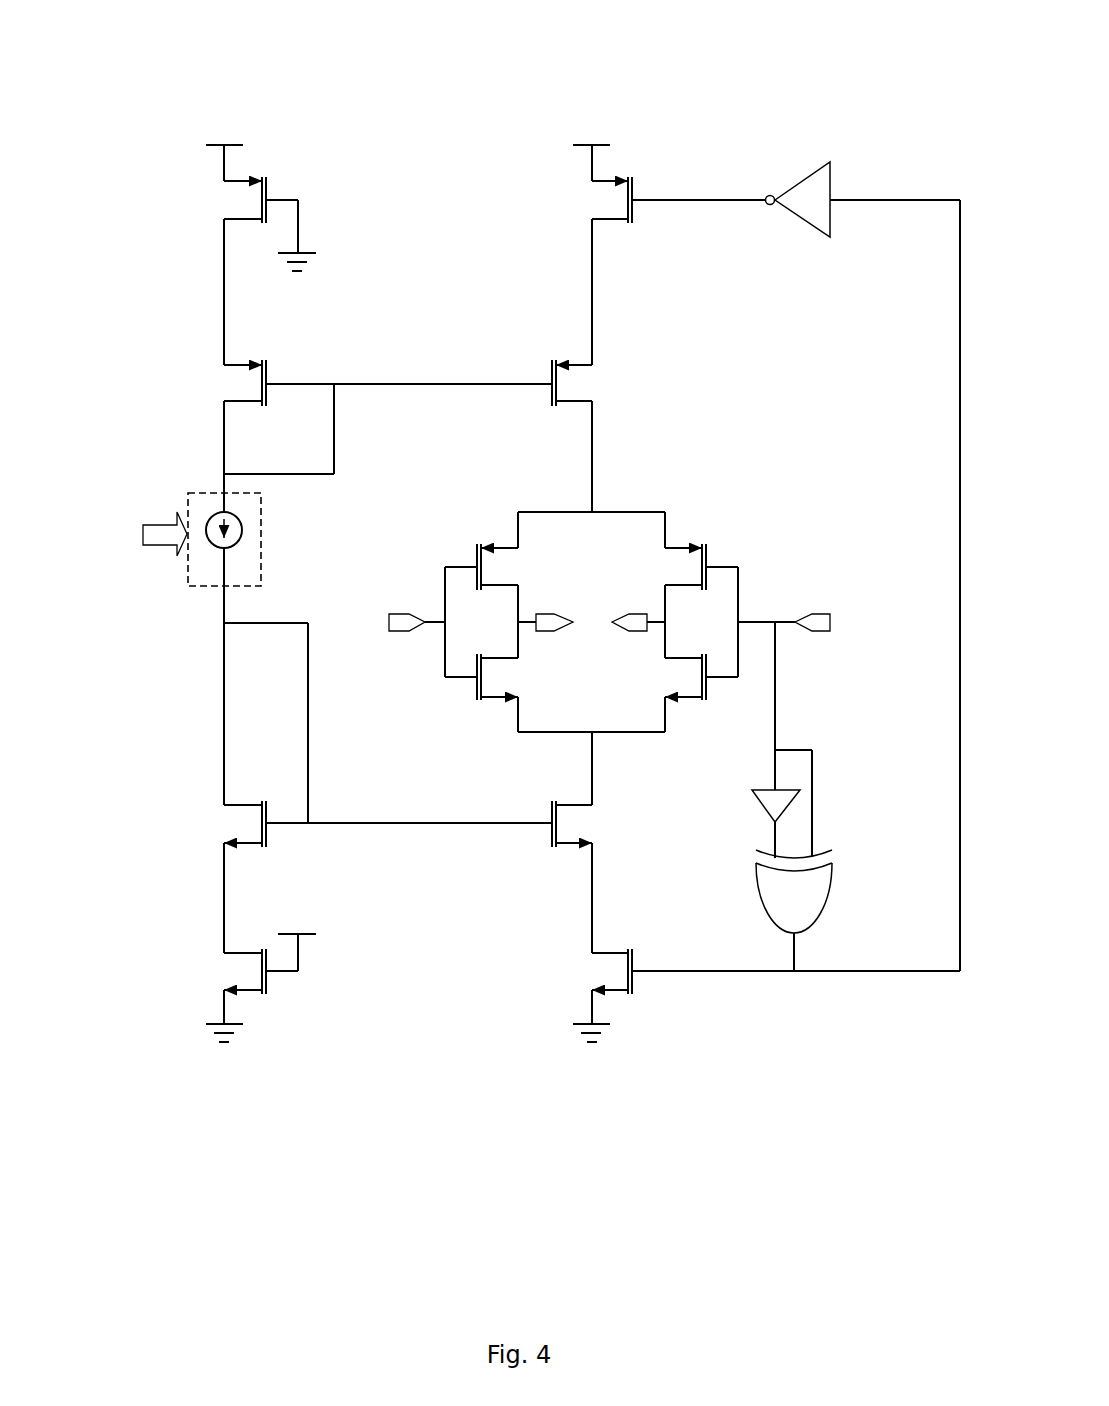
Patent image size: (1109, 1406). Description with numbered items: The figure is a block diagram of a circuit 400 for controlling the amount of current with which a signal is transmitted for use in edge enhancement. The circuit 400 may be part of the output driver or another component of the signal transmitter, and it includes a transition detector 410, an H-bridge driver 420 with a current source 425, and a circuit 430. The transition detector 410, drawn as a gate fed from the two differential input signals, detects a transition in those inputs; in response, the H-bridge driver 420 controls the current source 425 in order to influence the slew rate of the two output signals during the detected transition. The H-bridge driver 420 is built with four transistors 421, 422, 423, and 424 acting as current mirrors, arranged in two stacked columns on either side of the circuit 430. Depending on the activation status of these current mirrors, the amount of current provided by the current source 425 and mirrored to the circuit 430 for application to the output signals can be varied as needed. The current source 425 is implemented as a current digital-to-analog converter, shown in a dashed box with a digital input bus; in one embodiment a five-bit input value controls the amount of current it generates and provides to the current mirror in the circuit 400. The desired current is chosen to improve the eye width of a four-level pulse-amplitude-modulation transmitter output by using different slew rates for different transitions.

The circuit 400 is at (776, 33).
The transition detector 410 is at (843, 830).
The H-bridge driver 420 is at (410, 358).
The transistor 421 is at (218, 383).
The transistor 422 is at (212, 812).
The transistor 423 is at (604, 370).
The transistor 424 is at (604, 822).
The current source 425 is at (178, 476).
The circuit 430 is at (690, 478).